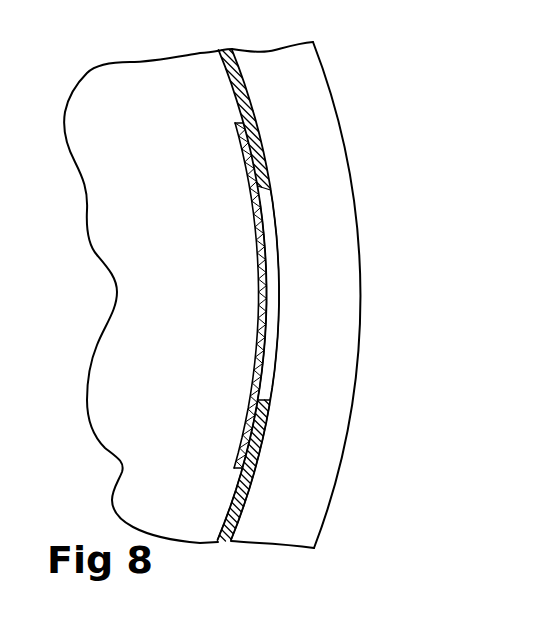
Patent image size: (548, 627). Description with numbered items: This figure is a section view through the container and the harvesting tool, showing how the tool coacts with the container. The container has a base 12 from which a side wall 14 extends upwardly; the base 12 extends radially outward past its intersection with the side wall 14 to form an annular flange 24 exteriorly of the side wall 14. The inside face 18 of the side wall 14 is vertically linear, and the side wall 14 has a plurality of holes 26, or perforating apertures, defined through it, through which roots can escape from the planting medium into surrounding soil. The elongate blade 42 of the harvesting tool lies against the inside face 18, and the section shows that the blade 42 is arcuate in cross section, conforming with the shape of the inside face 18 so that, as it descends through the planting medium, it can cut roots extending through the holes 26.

The base 12 is at (86, 191).
The side wall 14 is at (216, 49).
The inside face 18 is at (226, 500).
The annular flange 24 is at (331, 148).
The holes 26 is at (268, 188).
The blade 42 is at (252, 230).